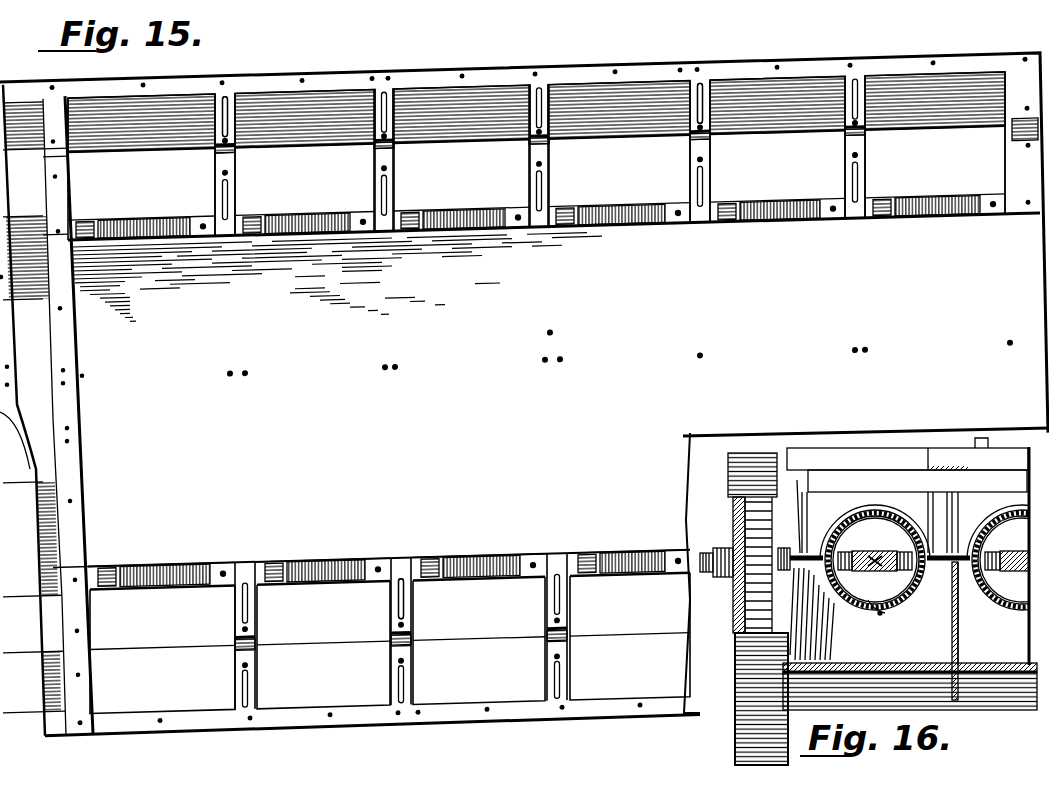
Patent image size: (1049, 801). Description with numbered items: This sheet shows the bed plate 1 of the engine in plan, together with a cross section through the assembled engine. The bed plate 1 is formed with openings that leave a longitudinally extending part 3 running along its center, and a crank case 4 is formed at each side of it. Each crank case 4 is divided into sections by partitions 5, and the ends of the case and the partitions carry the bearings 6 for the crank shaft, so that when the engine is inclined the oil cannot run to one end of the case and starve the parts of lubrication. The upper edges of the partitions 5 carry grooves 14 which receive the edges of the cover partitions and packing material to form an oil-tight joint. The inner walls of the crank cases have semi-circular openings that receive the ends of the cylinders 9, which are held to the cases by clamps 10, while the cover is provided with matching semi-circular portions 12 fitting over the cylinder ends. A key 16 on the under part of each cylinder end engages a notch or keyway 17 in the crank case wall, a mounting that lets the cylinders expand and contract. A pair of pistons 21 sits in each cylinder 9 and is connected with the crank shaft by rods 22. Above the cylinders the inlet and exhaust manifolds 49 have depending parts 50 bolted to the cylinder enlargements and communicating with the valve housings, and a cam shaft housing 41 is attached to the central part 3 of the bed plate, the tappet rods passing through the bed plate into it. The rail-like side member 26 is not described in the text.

In FIG. 15, the bed plate 1 is at (749, 258).
In FIG. 16, the longitudinally extending part 3 is at (712, 423).
In FIG. 15, the crank case 4 is at (536, 380).
In FIG. 16, the crank case 4 is at (910, 655).
In FIG. 15, the partitions 5 is at (550, 392).
In FIG. 16, the partitions 5 is at (962, 628).
In FIG. 15, the bearings 6 is at (540, 393).
In FIG. 16, the cylinders 9 is at (906, 631).
In FIG. 16, the clamps 10 is at (940, 527).
In FIG. 16, the semi-circular portions 12 is at (840, 527).
In FIG. 15, the grooves 14 is at (463, 353).
In FIG. 16, the key 16 is at (873, 607).
In FIG. 16, the notches or keyways 17 is at (880, 613).
In FIG. 16, the pistons 21 is at (933, 569).
In FIG. 16, the rods 22 is at (868, 575).
In FIG. 15, the side rail 26 is at (39, 373).
In FIG. 16, the side rail 26 is at (747, 713).
In FIG. 16, the cam shaft housing 41 is at (810, 697).
In FIG. 16, the inlet and exhaust manifolds 49 is at (907, 465).
In FIG. 16, the depending parts 50 is at (870, 543).